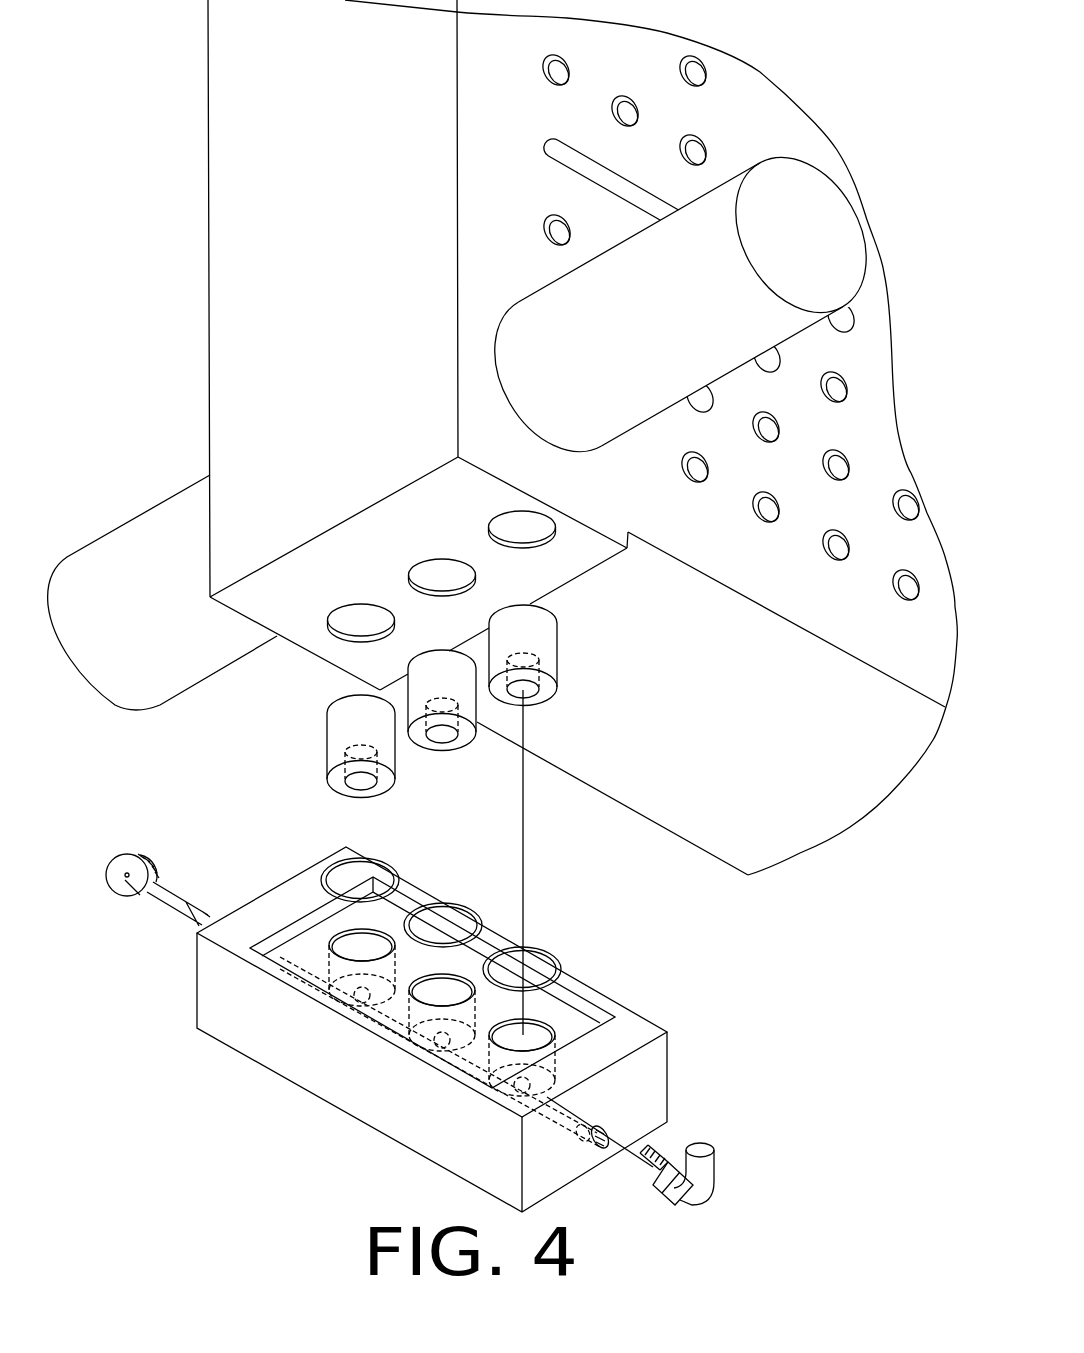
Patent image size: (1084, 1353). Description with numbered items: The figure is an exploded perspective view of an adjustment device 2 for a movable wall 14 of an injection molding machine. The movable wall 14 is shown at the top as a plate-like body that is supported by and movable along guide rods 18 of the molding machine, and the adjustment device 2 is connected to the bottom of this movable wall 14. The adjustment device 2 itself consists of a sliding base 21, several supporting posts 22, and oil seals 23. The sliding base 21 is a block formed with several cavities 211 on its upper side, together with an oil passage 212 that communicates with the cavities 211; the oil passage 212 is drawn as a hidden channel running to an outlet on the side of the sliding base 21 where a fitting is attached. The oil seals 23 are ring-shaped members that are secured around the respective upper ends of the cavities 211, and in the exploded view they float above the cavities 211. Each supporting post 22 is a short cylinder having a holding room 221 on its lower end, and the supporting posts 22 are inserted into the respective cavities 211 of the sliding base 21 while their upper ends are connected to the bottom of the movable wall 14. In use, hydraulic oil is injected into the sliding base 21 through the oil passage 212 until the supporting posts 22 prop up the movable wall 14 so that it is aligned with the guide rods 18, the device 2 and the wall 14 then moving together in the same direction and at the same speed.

The movable wall 14 is at (239, 255).
The guide rods 18 is at (157, 520).
The adjustment device 2 is at (715, 1017).
The sliding base 21 is at (392, 1103).
The cavities 211 is at (358, 948).
The oil passage 212 is at (553, 1118).
The supporting posts 22 is at (337, 715).
The holding room 221 is at (360, 782).
The oil seals 23 is at (335, 865).